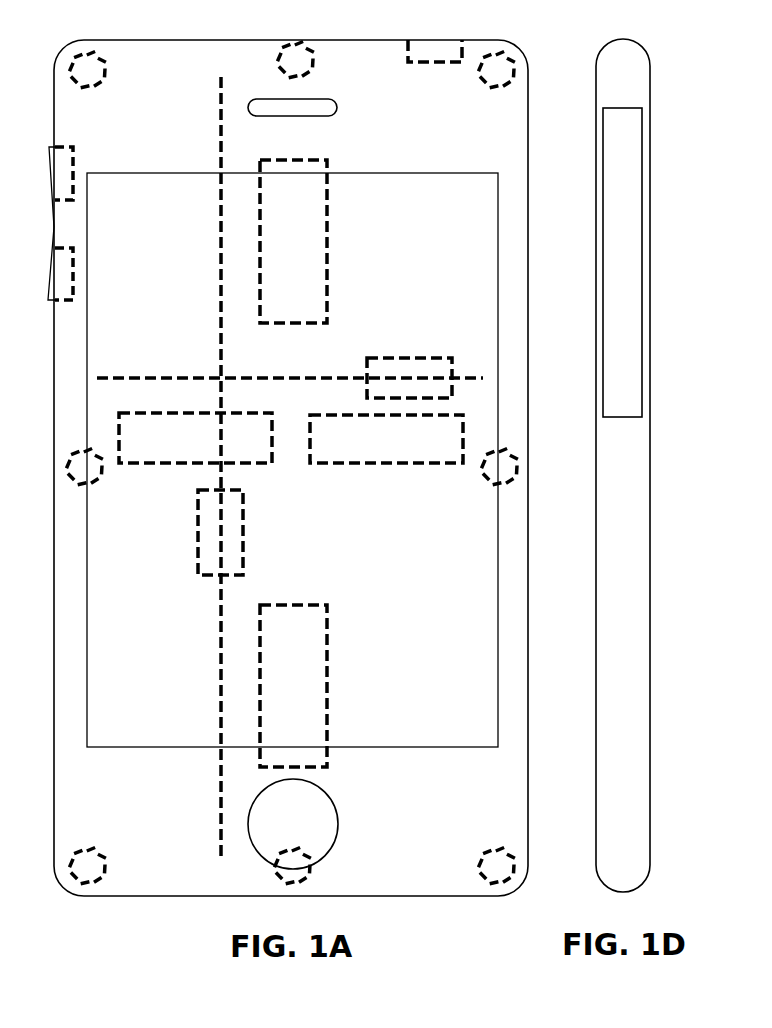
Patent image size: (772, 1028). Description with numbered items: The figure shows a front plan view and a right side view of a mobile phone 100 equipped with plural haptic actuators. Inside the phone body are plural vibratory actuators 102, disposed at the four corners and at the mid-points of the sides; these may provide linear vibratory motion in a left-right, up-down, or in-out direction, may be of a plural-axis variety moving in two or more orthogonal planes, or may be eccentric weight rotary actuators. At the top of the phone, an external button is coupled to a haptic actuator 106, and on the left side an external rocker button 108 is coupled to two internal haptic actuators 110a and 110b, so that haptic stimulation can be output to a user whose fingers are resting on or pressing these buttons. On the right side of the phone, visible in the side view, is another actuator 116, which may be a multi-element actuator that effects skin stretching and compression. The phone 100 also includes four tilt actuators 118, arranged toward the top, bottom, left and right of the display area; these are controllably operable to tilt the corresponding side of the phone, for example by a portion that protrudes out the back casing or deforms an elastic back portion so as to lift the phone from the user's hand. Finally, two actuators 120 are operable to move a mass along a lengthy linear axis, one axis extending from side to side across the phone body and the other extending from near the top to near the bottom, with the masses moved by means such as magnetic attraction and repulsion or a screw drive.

In FIG. 1A, the mobile phone 100 is at (183, 40).
In FIG. 1D, the mobile phone 100 is at (616, 40).
In FIG. 1A, the vibratory actuators 102 is at (108, 84).
In FIG. 1A, the haptic actuator 106 is at (424, 64).
In FIG. 1A, the external rocker button 108 is at (48, 152).
In FIG. 1A, the internal haptic actuator 110a is at (74, 177).
In FIG. 1A, the internal haptic actuator 110b is at (74, 278).
In FIG. 1D, the actuator 116 is at (603, 183).
In FIG. 1A, the tilt actuators 118 is at (328, 196).
In FIG. 1A, the actuators 120 is at (394, 357).